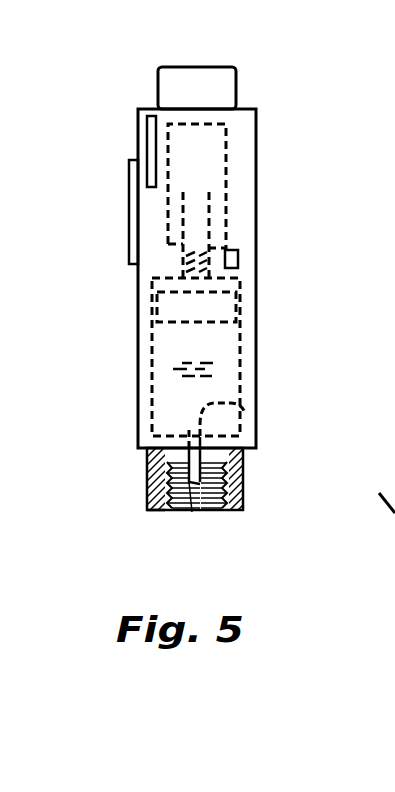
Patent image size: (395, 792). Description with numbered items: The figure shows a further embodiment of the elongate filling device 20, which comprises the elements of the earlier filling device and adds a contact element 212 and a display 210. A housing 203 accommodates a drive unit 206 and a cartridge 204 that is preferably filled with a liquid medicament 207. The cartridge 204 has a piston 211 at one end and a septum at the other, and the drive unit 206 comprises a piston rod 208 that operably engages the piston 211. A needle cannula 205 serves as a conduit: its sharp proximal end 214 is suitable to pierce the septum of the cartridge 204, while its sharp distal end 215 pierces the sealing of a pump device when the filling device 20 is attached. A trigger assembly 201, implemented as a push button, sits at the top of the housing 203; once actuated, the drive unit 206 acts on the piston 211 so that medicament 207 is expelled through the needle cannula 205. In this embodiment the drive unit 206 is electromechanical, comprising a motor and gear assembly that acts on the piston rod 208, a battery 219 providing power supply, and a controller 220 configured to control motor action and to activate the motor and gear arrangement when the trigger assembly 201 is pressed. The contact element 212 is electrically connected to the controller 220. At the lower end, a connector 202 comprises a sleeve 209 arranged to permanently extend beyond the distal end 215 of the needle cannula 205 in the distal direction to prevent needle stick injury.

The filling device 20 is at (120, 167).
The trigger assembly 201 is at (220, 84).
The connector 202 is at (189, 470).
The housing 203 is at (257, 333).
The cartridge 204 is at (160, 390).
The needle cannula 205 is at (150, 470).
The drive unit 206 is at (213, 163).
The liquid medicament 207 is at (205, 377).
The piston rod 208 is at (183, 260).
The sleeve 209 is at (148, 490).
The display 210 is at (133, 225).
The piston 211 is at (222, 305).
The contact element 212 is at (152, 512).
The sharp proximal end 214 is at (245, 413).
The sharp distal end 215 is at (195, 512).
The battery 219 is at (146, 128).
The controller 220 is at (238, 258).